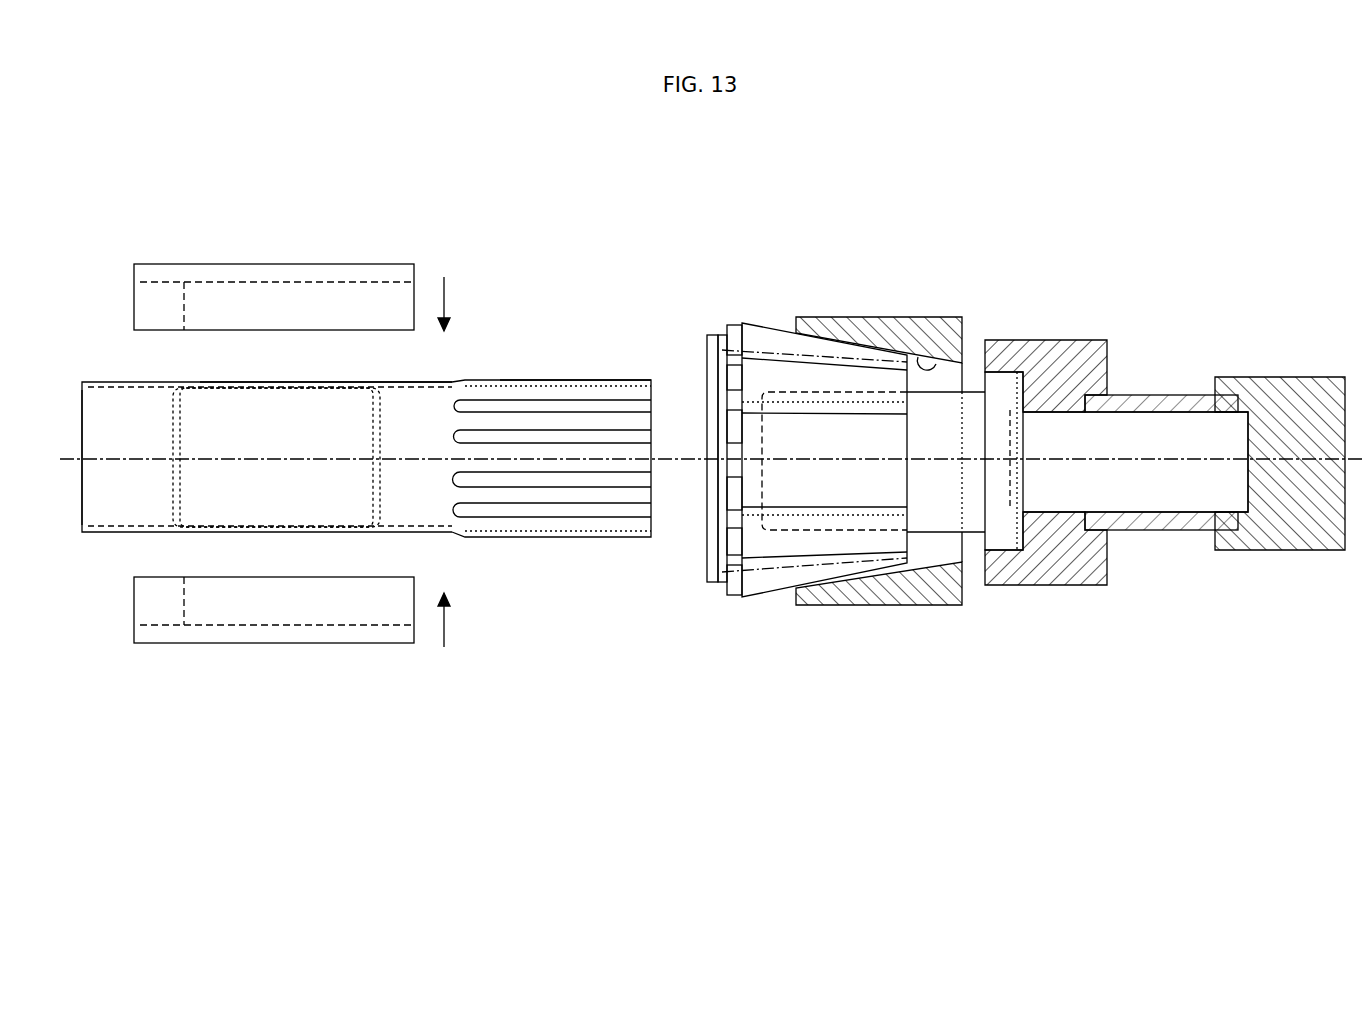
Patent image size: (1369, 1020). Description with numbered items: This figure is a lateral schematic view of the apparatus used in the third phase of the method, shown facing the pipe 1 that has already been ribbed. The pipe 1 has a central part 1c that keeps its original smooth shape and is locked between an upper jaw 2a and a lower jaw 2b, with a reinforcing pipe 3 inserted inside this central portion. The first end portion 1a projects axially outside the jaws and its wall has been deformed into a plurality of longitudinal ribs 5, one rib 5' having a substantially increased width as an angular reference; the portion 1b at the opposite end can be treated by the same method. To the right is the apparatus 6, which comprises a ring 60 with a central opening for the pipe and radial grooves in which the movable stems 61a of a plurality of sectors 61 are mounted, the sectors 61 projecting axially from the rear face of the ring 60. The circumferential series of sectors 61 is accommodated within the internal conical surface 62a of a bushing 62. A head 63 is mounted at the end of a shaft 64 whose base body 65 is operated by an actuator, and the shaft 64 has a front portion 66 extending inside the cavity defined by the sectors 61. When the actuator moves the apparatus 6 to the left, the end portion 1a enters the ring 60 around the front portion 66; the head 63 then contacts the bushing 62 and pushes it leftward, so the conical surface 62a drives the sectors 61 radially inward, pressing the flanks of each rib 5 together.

The pipe 1 is at (110, 366).
The first end portion 1a is at (437, 517).
The opposite end portion 1b is at (110, 515).
The central part 1c is at (307, 403).
The upper jaw 2a is at (293, 282).
The lower jaw 2b is at (222, 633).
The reinforcing pipe 3 is at (207, 420).
The longitudinal ribs 5 is at (569, 458).
The longitudinal rib of increased width 5' is at (575, 361).
The apparatus 6 is at (1196, 276).
The ring 60 is at (712, 352).
The sectors 61 is at (757, 343).
The movable stems 61a is at (735, 325).
The bushing 62 is at (918, 585).
The internal conical surface 62a is at (942, 362).
The head 63 is at (1052, 370).
The shaft 64 is at (1167, 497).
The base body 65 is at (1272, 403).
The front portion of the shaft 66 is at (962, 410).